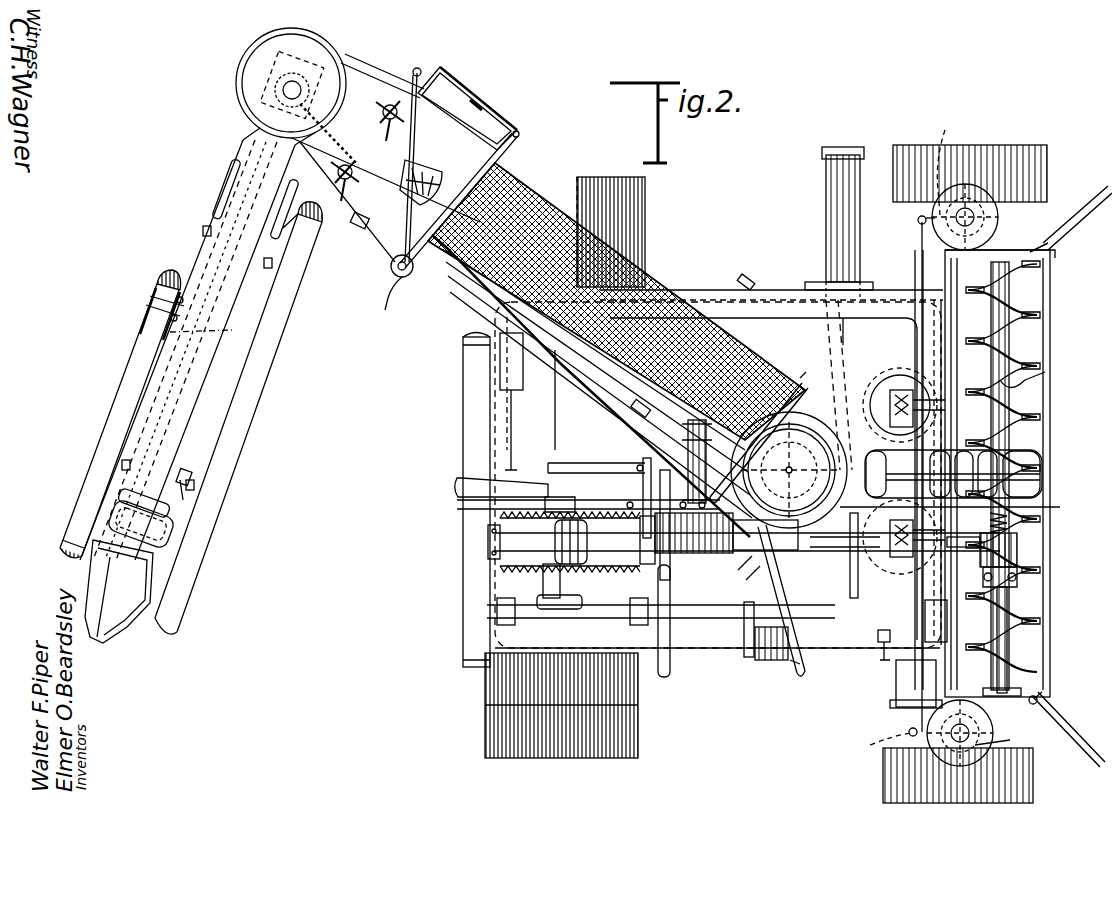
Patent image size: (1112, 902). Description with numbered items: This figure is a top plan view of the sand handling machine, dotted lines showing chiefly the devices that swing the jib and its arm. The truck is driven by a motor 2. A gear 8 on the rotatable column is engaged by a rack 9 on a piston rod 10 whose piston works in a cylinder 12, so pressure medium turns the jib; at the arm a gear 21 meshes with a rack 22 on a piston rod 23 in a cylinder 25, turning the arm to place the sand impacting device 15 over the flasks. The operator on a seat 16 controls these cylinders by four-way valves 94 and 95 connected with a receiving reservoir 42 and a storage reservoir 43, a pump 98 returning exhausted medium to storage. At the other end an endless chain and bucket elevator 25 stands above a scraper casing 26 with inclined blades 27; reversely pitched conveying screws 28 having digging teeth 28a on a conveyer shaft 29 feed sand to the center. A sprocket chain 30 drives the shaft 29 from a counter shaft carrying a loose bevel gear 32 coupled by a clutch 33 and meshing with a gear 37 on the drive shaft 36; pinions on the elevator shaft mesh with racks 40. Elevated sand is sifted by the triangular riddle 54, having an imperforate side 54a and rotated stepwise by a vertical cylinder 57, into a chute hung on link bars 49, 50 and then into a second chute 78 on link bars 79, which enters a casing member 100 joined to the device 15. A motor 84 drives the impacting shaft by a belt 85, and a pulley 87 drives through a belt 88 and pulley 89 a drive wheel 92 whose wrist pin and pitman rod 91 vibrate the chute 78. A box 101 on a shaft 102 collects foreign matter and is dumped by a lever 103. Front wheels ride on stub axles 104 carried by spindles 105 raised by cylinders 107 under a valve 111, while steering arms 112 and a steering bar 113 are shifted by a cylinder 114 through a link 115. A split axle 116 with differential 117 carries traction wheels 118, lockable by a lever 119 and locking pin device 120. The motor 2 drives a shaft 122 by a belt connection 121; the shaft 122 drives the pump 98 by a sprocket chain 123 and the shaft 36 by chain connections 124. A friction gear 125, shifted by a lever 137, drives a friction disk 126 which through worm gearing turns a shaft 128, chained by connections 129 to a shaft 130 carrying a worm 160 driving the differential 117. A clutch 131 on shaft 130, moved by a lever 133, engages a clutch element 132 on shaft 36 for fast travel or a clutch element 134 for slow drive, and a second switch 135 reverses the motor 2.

The motor 2 is at (520, 355).
The gear 8 is at (796, 388).
The rack 9 is at (852, 388).
The piston rod 10 is at (835, 360).
The cylinder 12 is at (826, 205).
The sand projecting and impacting device 15 is at (112, 630).
The seat 16 is at (443, 173).
The gear 21 is at (250, 140).
The rack 22 is at (262, 98).
The piston rod 23 is at (325, 108).
The elevator 25 is at (392, 270).
The scraper casing 26 is at (1020, 595).
The gathering or deflecting blades 27 is at (1072, 210).
The conveying screws 28 is at (1010, 352).
The digging teeth 28a is at (1045, 372).
The conveyer shaft 29 is at (1008, 618).
The sprocket chain 30 is at (1040, 694).
The bevel gear 32 is at (1017, 550).
The clutch 33 is at (1010, 520).
The drive shaft 36 is at (785, 545).
The gear 37 is at (983, 576).
The racks 40 is at (945, 410).
The pressure receiving reservoir 42 is at (900, 378).
The pressure storage reservoir 43 is at (808, 672).
The link bar 49 is at (760, 275).
The link bar 50 is at (460, 92).
The riddle 54 is at (640, 262).
The imperforate side 54a is at (500, 290).
The vertical cylinder 57 is at (391, 298).
The second chute 78 is at (195, 425).
The link bars 79 is at (203, 231).
The motor 84 is at (222, 187).
The drive belt 85 is at (216, 478).
The pulley 87 is at (68, 545).
The belt 88 is at (120, 417).
The pulley 89 is at (158, 284).
The pitman rod 91 is at (186, 388).
The drive wheel 92 is at (232, 330).
The four-way valve 94 is at (420, 72).
The four-way valve 95 is at (312, 214).
The pump 98 is at (770, 655).
The casing member 100 is at (172, 530).
The box 101 is at (478, 100).
The shaft 102 is at (500, 120).
The lever 103 is at (520, 140).
The stub axles 104 is at (990, 148).
The vertical spindles 105 is at (998, 218).
The cylinders 107 is at (1006, 734).
The controlling valve 111 is at (884, 645).
The steering arms 112 is at (904, 435).
The steering bar 113 is at (918, 236).
The cylinder 114 is at (936, 680).
The link 115 is at (947, 620).
The rear split axle 116 is at (520, 440).
The differential 117 is at (460, 508).
The rear traction wheels 118 is at (645, 203).
The lever 119 is at (470, 480).
The locking pin device 120 is at (596, 478).
The belt connection 121 is at (470, 610).
The shaft 122 is at (670, 520).
The sprocket chain connection 123 is at (744, 625).
The sprocket chain driving connections 124 is at (858, 580).
The friction gear 125 is at (749, 570).
The friction disk 126 is at (726, 533).
The shaft 128 is at (688, 440).
The sprocket chain connections 129 is at (640, 468).
The shaft 130 is at (565, 585).
The clutch 131 is at (700, 566).
The clutch element 132 is at (681, 543).
The manual lever 133 is at (670, 677).
The clutch element 134 is at (632, 620).
The second switch 135 is at (884, 662).
The lever 137 is at (814, 660).
The worm 160 is at (520, 550).